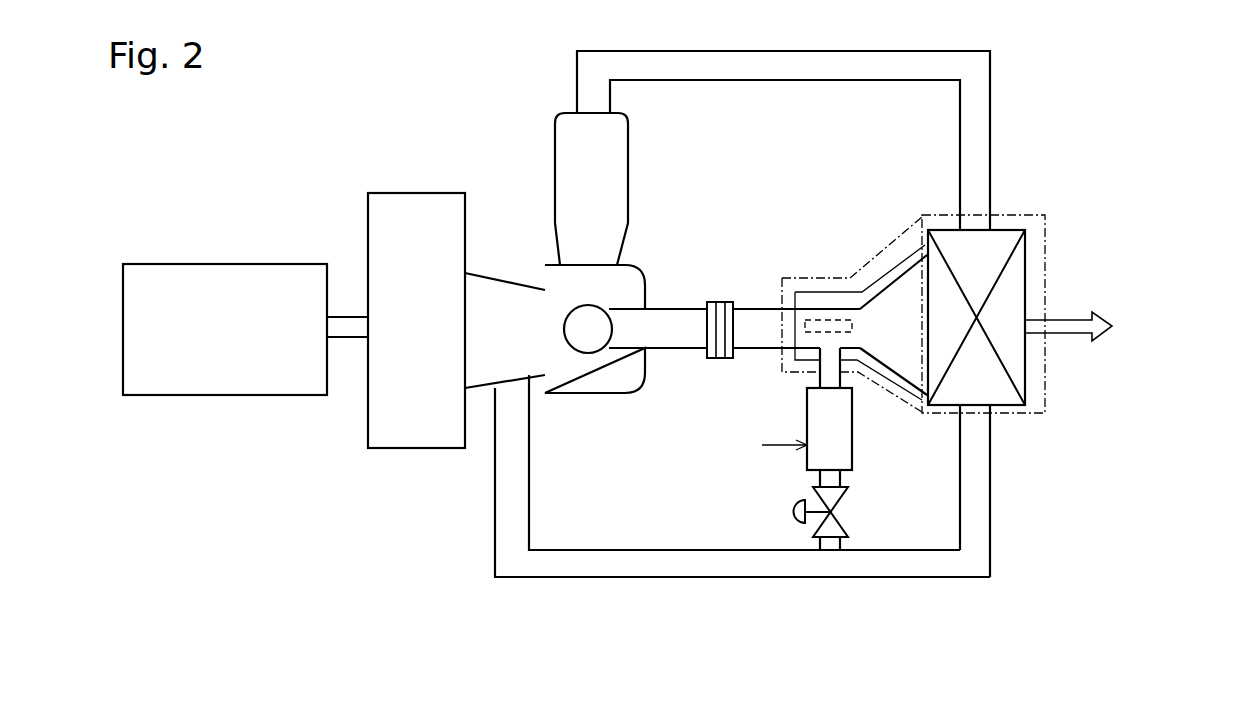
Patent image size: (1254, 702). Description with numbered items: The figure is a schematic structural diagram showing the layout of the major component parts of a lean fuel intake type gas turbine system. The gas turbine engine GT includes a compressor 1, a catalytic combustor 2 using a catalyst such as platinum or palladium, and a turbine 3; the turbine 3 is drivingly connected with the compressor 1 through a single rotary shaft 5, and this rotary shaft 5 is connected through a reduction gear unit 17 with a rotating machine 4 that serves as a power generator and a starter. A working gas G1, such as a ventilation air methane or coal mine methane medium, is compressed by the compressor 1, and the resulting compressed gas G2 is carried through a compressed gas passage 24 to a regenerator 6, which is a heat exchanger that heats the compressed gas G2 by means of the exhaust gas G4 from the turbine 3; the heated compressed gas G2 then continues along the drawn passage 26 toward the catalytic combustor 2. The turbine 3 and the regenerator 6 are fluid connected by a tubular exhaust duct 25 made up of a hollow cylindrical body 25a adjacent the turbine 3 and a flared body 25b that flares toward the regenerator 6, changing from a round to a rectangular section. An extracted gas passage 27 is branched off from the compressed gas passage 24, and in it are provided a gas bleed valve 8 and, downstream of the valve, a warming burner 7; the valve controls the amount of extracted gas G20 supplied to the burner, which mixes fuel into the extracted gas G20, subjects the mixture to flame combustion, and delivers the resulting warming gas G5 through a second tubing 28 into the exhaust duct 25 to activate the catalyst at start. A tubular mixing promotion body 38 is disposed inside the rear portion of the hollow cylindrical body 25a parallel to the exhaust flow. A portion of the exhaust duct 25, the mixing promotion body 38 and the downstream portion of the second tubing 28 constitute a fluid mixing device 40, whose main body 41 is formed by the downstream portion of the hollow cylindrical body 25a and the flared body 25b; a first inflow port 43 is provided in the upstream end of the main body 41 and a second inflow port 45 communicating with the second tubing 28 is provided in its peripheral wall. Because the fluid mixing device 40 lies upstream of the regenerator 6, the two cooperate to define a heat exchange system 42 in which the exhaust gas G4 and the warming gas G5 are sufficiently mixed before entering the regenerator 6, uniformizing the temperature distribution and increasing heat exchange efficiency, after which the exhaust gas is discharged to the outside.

The compressor 1 is at (487, 370).
The catalytic combustor 2 is at (578, 155).
The turbine 3 is at (596, 392).
The rotating machine 4 is at (222, 380).
The rotary shaft 5 is at (347, 322).
The regenerator 6 is at (1015, 313).
The warming burner 7 is at (842, 455).
The gas bleed valve 8 is at (843, 516).
The reduction gear unit 17 is at (400, 435).
The compressed gas passage 24 is at (775, 570).
The tubular exhaust duct 25 is at (817, 187).
The hollow cylindrical body 25a is at (686, 309).
The flared body 25b is at (887, 288).
The supply passage 26 is at (990, 85).
The extracted gas passage 27 is at (817, 542).
The second tubing 28 is at (842, 362).
The mixing promotion body 38 is at (862, 325).
The fluid mixing device 40 is at (803, 303).
The main body 41 is at (838, 309).
The heat exchange system 42 is at (1048, 252).
The first inflow port 43 is at (792, 323).
The second inflow port 45 is at (840, 345).
The working gas G1 is at (488, 260).
The compressed gas G2 is at (750, 66).
The exhaust gas G4 is at (681, 334).
The warming gas G5 is at (834, 352).
The extracted gas G20 is at (835, 552).
The gas turbine engine GT is at (562, 410).